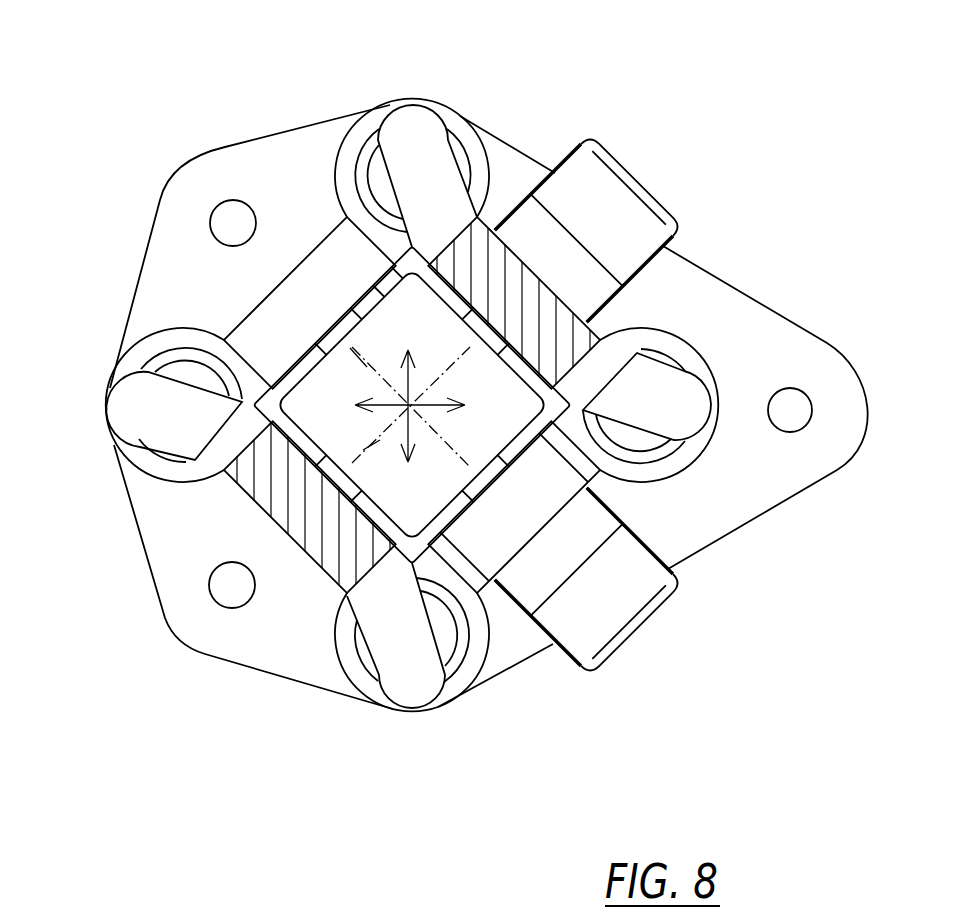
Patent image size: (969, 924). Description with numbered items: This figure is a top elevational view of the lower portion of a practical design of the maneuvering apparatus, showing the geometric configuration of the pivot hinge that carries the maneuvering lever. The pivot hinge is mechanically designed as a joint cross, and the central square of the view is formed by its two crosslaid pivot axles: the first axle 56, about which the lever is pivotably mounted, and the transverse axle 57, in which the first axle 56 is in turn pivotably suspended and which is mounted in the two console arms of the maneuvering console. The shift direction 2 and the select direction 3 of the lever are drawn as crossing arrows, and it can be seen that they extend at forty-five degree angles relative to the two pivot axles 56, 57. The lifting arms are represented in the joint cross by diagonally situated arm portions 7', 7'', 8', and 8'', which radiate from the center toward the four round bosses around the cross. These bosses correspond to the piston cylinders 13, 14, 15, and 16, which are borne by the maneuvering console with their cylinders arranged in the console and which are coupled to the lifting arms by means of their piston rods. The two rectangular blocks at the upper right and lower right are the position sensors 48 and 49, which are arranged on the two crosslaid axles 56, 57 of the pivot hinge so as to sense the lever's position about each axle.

The shift direction 2 is at (462, 407).
The select direction 3 is at (402, 375).
The arm portion 7' is at (143, 436).
The arm portion 7'' is at (681, 486).
The arm portion 8' is at (422, 691).
The arm portion 8'' is at (400, 137).
The piston cylinder 13 is at (426, 99).
The piston cylinder 14 is at (103, 404).
The piston cylinder 15 is at (392, 714).
The piston cylinder 16 is at (717, 371).
The position sensor 48 is at (613, 205).
The position sensor 49 is at (620, 615).
The first axle 56 is at (366, 453).
The transverse axle 57 is at (360, 363).